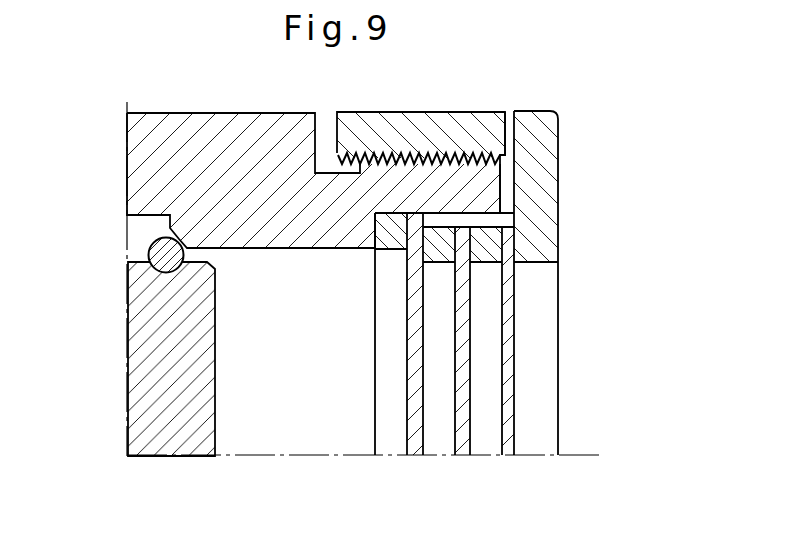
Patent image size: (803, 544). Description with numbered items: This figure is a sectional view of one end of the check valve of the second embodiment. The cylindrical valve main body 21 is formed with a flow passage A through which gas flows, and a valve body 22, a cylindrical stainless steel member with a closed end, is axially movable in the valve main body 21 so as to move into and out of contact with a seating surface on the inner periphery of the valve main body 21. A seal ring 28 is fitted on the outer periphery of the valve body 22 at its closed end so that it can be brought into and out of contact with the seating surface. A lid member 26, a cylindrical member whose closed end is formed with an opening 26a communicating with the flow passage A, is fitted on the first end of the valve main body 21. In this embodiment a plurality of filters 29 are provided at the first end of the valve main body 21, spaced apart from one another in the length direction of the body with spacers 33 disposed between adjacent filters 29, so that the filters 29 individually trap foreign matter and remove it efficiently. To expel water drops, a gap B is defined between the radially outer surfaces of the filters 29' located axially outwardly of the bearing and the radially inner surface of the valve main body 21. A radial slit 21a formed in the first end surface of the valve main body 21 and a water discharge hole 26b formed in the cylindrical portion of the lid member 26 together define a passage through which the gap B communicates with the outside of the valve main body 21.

The valve main body 21 is at (185, 150).
The radial slit 21a is at (515, 165).
The valve body 22 is at (148, 382).
The lid member 26 is at (535, 140).
The opening 26a is at (538, 265).
The water discharge hole 26b is at (497, 122).
The seal ring 28 is at (162, 252).
The filter 29 is at (413, 334).
The filters located axially outwardly 29' is at (493, 487).
The spacer 33 is at (485, 252).
The flow passage A is at (259, 283).
The gap B is at (437, 222).